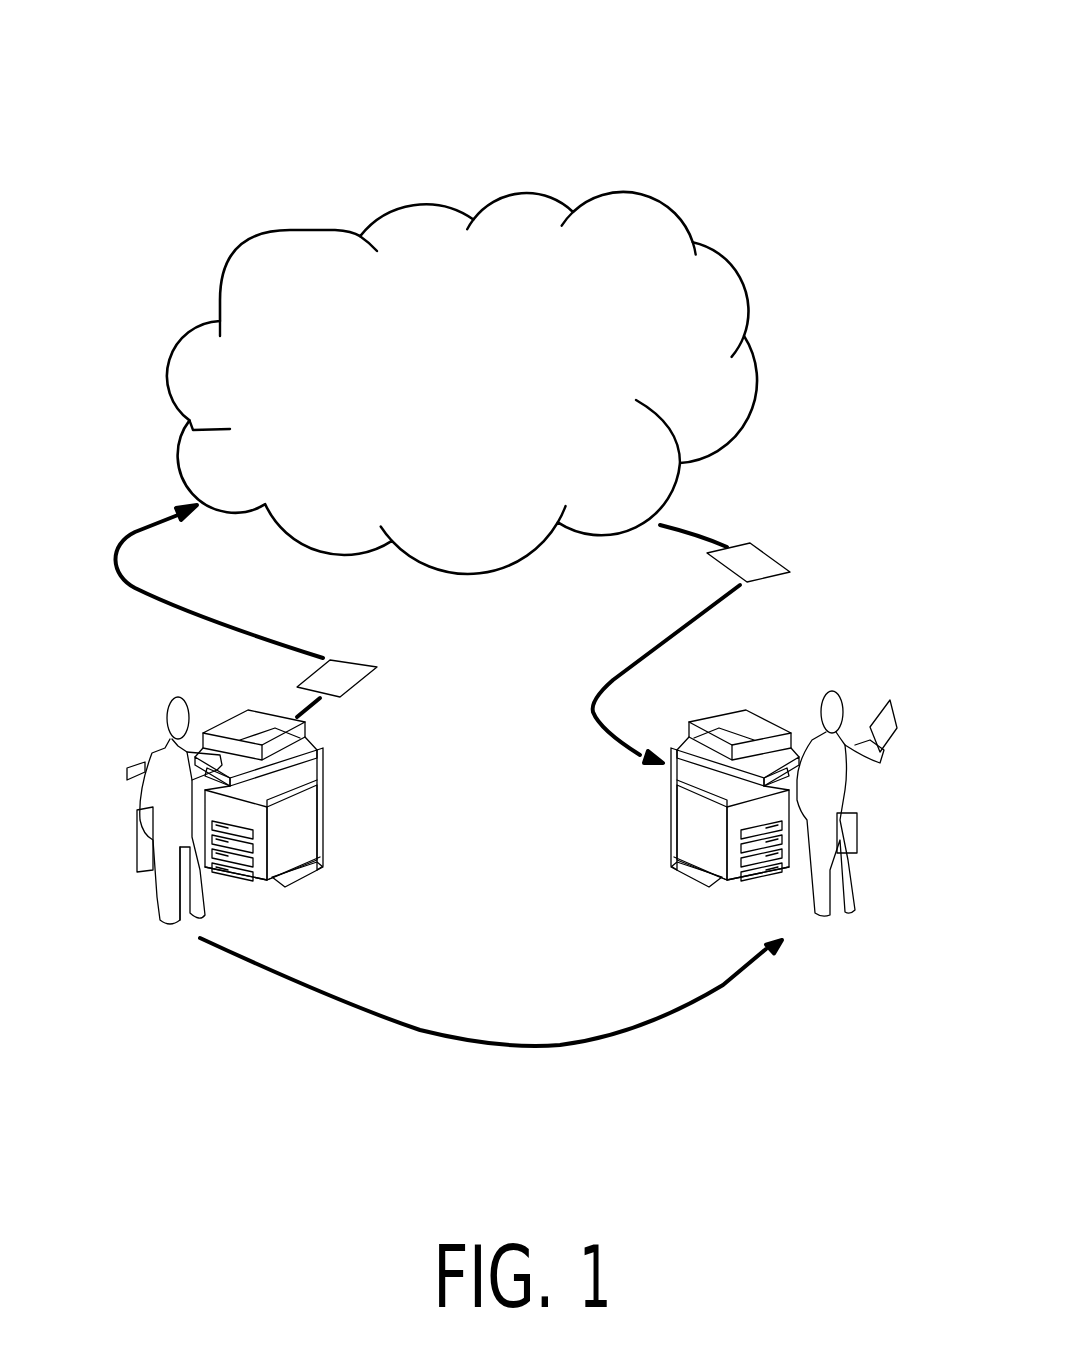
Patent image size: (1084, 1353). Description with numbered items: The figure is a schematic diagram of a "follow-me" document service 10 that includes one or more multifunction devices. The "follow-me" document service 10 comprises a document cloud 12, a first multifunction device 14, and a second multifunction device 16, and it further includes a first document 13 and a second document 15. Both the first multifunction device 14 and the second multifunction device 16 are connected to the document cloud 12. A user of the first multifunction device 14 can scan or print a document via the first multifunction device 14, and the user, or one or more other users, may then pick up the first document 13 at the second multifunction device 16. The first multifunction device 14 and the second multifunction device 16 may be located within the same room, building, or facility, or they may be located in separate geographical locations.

The "follow-me" document service 10 is at (799, 63).
The document cloud 12 is at (815, 342).
The first document 13 is at (827, 535).
The first multifunction device 14 is at (905, 890).
The second document 15 is at (420, 700).
The second multifunction device 16 is at (108, 898).